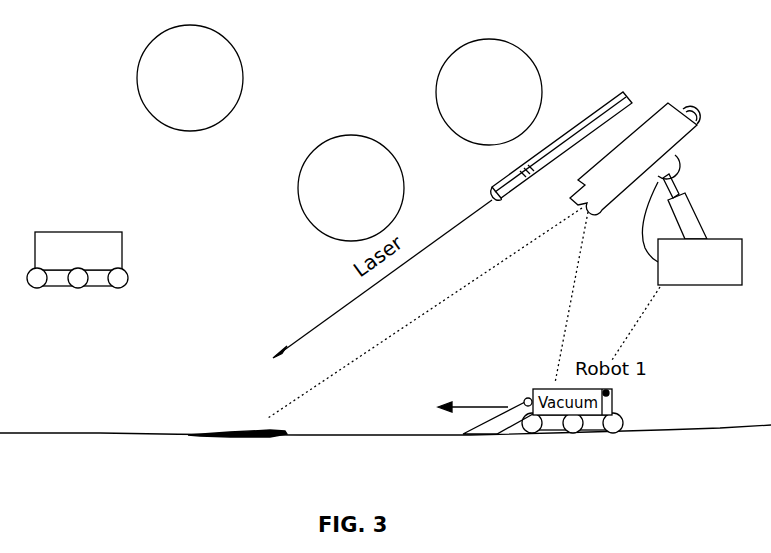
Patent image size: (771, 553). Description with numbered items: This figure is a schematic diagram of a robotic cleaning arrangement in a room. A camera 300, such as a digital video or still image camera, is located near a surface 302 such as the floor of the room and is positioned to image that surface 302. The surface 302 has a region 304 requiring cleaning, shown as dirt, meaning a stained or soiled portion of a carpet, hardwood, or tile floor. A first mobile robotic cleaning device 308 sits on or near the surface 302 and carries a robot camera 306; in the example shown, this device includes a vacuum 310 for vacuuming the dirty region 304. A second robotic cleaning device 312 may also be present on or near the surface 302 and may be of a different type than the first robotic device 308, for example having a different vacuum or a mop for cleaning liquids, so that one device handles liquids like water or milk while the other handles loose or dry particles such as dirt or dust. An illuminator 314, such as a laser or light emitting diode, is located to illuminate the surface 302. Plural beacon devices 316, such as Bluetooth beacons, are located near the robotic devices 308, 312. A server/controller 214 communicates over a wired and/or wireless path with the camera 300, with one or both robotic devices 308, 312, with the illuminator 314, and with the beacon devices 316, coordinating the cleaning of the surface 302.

The server/controller 214 is at (658, 280).
The camera 300 is at (678, 168).
The surface 302 is at (348, 436).
The region requiring cleaning 304 is at (198, 437).
The robot camera 306 is at (610, 393).
The first mobile robotic cleaning device 308 is at (625, 420).
The vacuum 310 is at (528, 398).
The second robotic cleaning device 312 is at (124, 247).
The illuminator 314 is at (605, 105).
The beacon device 316 is at (363, 135).